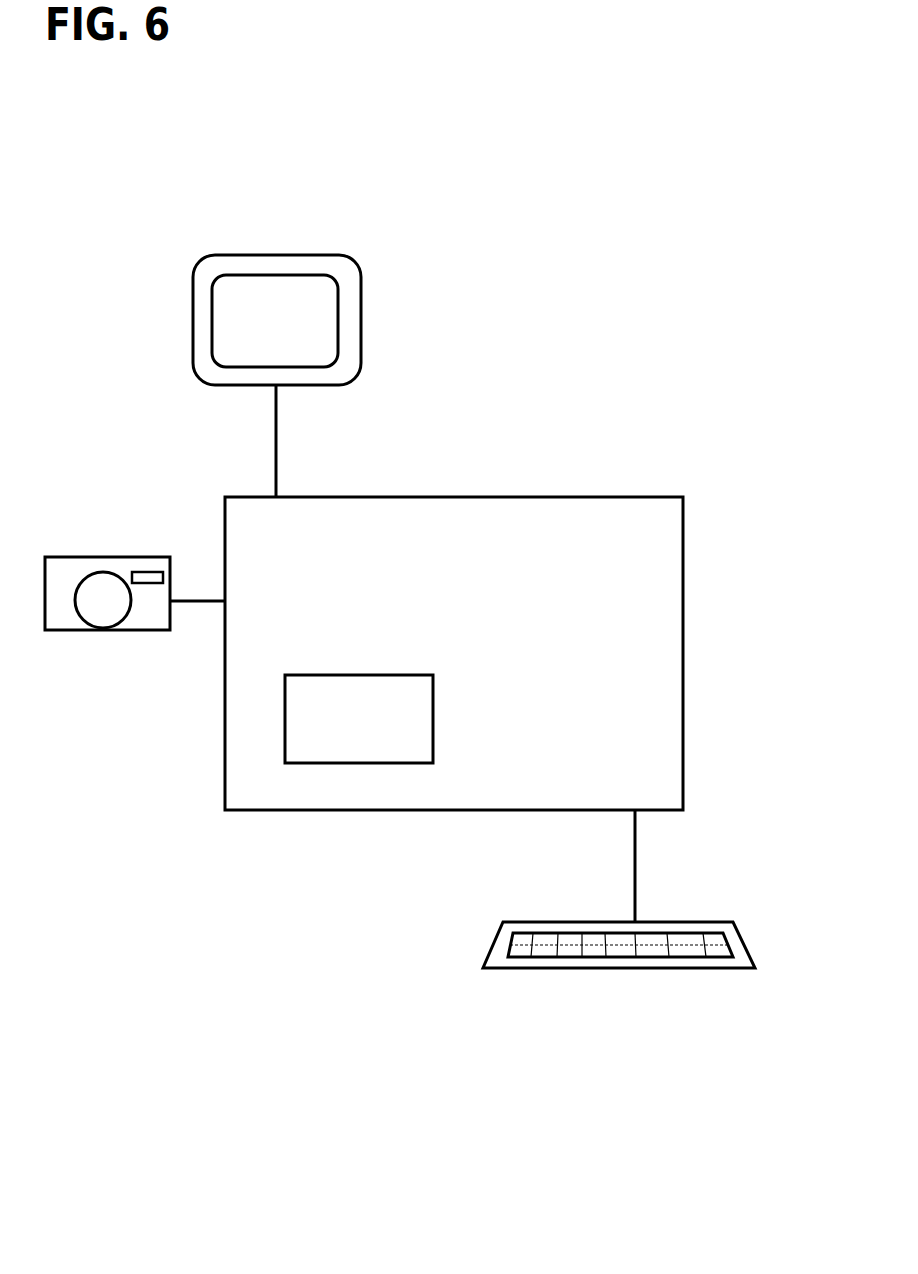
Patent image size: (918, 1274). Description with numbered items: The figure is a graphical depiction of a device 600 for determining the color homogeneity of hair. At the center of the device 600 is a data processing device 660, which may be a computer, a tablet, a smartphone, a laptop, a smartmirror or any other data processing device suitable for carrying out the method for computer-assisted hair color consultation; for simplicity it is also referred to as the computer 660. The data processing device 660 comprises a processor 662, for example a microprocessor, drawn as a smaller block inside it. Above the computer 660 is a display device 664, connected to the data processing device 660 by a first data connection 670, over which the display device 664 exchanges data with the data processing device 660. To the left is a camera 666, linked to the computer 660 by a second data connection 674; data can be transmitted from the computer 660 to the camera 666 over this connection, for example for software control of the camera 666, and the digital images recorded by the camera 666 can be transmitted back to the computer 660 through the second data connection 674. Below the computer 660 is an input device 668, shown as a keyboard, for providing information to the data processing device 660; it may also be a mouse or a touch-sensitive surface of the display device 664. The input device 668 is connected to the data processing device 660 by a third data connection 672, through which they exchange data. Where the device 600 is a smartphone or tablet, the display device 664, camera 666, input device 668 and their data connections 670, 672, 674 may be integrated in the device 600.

The device 600 is at (688, 281).
The data processing device 660 is at (512, 497).
The processor 662 is at (388, 763).
The display device 664 is at (361, 345).
The camera 666 is at (130, 630).
The input device 668 is at (610, 968).
The first data connection 670 is at (276, 477).
The third data connection 672 is at (635, 915).
The second data connection 674 is at (203, 600).